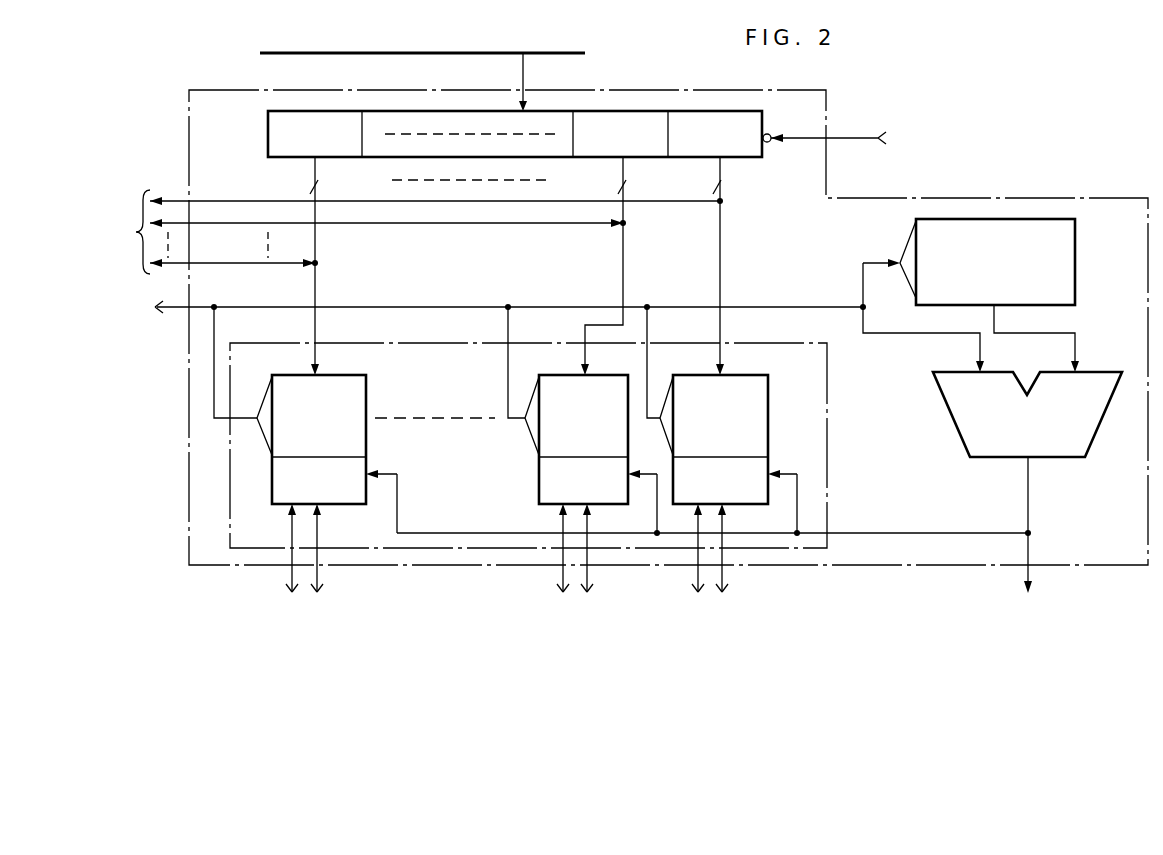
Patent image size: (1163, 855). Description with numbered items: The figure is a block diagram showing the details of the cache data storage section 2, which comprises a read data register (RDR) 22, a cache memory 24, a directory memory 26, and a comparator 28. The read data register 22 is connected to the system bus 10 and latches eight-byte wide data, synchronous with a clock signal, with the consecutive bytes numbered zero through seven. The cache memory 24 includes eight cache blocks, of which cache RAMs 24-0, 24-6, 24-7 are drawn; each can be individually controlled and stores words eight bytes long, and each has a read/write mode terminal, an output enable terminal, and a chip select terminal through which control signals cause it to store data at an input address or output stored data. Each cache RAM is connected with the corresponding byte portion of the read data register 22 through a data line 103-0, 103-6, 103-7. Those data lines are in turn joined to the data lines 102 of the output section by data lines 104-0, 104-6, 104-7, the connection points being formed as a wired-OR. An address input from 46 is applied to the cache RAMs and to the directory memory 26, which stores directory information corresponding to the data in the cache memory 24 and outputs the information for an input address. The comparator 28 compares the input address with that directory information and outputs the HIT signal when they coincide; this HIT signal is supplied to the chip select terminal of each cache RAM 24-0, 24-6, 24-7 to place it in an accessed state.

The cache data storage section 2 is at (1090, 197).
The system bus 10 is at (565, 52).
The read data register 22 is at (748, 160).
The cache memory 24 is at (830, 448).
The cache RAM 24-0 is at (366, 386).
The cache RAM 24-6 is at (536, 478).
The cache RAM 24-7 is at (745, 388).
The directory memory 26 is at (1060, 292).
The comparator 28 is at (1072, 450).
The address input from 46 is at (453, 357).
The data line 102 is at (149, 232).
The data line 103-0 is at (320, 291).
The data line 103-6 is at (622, 290).
The data line 103-7 is at (716, 256).
The data line 104-0 is at (205, 264).
The data line 104-6 is at (398, 224).
The data line 104-7 is at (527, 202).